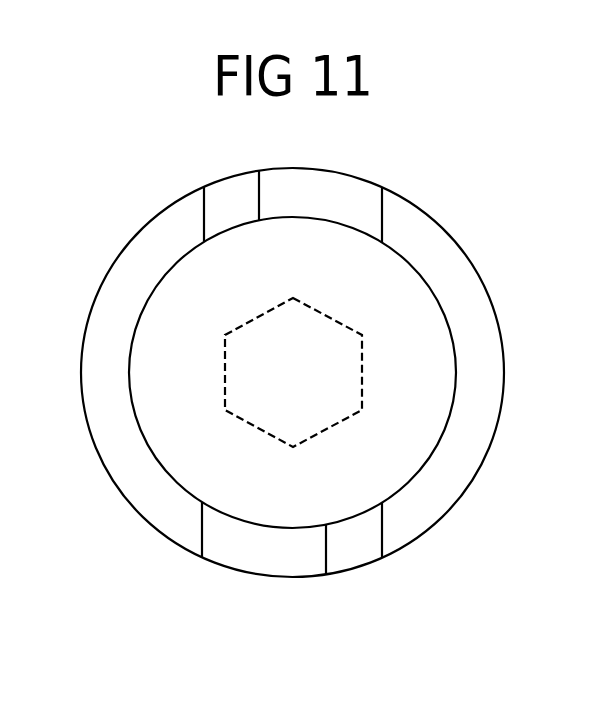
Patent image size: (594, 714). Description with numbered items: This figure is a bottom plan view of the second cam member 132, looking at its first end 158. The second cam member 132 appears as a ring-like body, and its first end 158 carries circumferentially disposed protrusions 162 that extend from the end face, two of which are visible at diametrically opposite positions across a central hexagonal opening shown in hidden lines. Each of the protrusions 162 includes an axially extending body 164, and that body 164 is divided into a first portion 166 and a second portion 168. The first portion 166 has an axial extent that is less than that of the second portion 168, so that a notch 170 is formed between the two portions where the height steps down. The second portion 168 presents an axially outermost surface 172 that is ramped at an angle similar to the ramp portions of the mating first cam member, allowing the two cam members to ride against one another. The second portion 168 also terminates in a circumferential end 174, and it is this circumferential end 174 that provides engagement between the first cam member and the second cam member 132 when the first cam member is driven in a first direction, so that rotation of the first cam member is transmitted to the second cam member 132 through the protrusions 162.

The second cam member 132 is at (144, 162).
The first end 158 is at (472, 258).
The protrusions 162 is at (352, 195).
The axially extending body 164 is at (377, 180).
The first portion 166 is at (370, 210).
The second portion 168 is at (205, 186).
The notch 170 is at (262, 198).
The axially outermost surface 172 is at (232, 195).
The circumferential end 174 is at (204, 223).